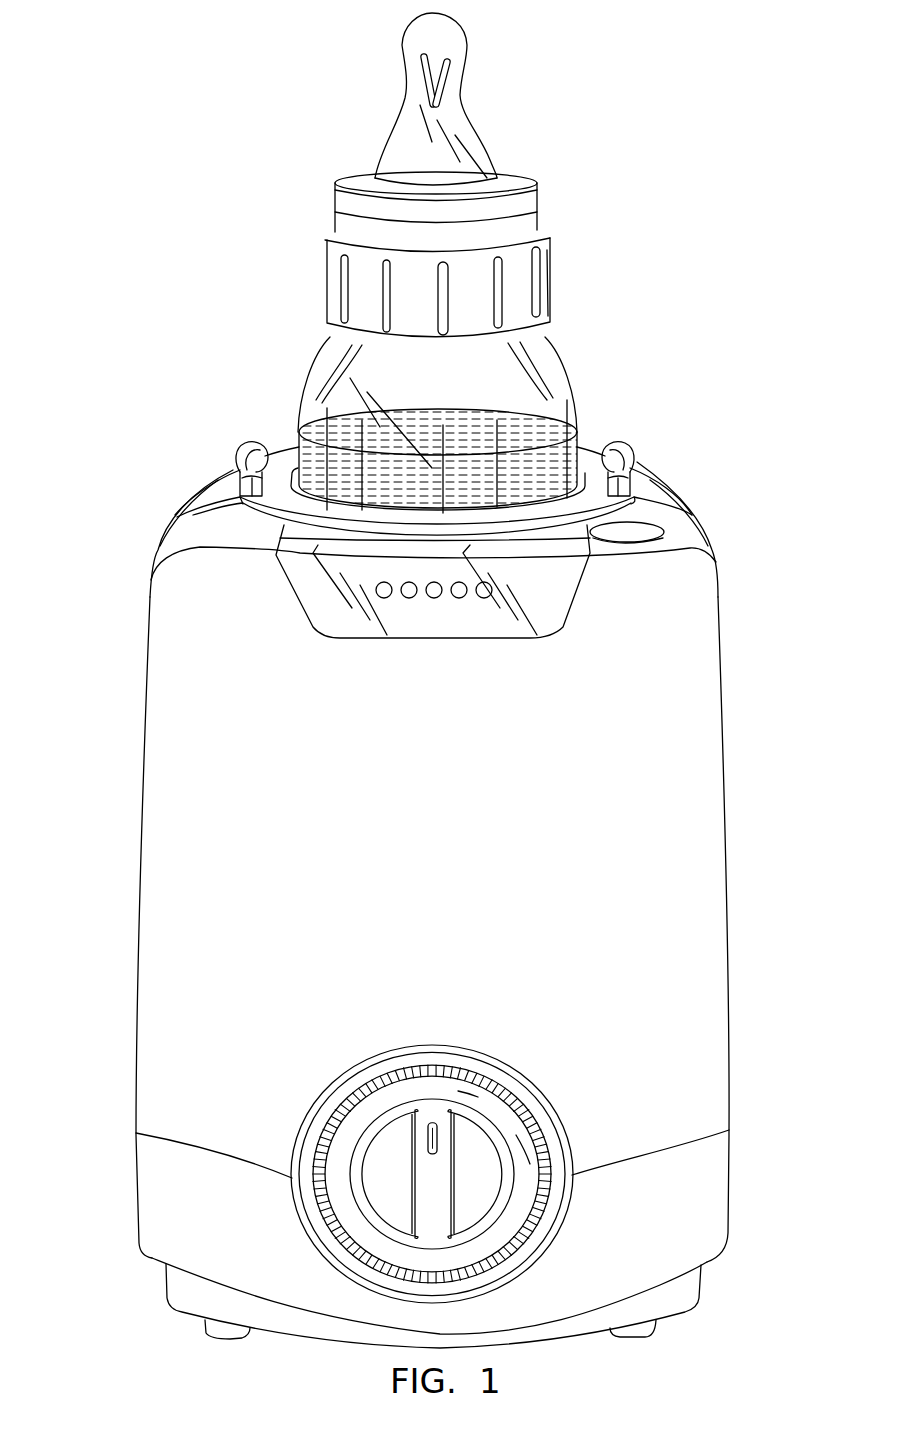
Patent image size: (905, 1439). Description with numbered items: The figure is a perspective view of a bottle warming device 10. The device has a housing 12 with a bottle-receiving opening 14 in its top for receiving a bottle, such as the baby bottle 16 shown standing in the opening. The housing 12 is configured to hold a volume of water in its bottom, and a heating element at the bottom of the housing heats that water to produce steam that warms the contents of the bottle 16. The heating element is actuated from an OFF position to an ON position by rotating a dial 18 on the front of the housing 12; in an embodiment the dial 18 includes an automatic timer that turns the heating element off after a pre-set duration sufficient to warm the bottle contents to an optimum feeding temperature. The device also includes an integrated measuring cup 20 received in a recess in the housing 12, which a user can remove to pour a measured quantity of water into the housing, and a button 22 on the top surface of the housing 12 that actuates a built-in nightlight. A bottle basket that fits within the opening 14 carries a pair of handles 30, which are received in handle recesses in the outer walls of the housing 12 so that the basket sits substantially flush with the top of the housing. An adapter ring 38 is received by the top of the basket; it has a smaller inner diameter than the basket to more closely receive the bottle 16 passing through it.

The bottle warming device 10 is at (746, 218).
The housing 12 is at (710, 783).
The bottle-receiving opening 14 is at (594, 437).
The baby bottle 16 is at (315, 380).
The dial 18 is at (483, 1207).
The measuring cup 20 is at (562, 597).
The button 22 is at (652, 534).
The handles 30 is at (214, 490).
The adapter ring 38 is at (287, 470).